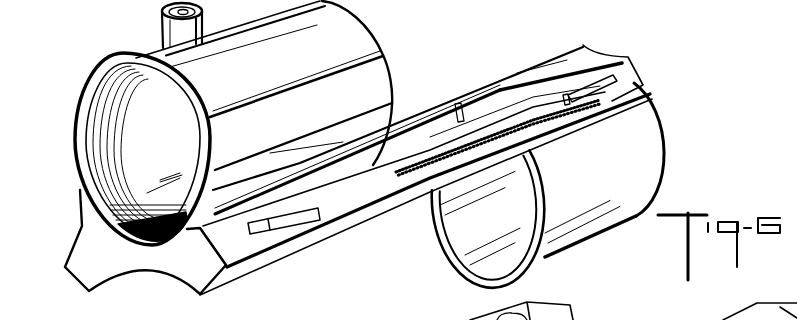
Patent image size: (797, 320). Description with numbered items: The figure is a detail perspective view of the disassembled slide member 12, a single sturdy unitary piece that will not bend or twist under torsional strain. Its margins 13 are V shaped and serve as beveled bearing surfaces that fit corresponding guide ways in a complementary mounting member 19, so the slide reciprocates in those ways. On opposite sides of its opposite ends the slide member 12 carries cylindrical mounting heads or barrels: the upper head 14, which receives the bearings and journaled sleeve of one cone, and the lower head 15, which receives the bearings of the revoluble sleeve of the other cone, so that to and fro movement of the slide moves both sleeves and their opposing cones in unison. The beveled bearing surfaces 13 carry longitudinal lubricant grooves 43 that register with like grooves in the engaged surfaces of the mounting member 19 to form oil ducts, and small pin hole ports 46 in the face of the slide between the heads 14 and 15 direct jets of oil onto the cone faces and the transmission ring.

The slide member 12 is at (545, 61).
The margins 13 is at (67, 267).
The upper mounting head 14 is at (344, 25).
The lower mounting head 15 is at (623, 218).
The mounting member 19 is at (450, 318).
The lubricant grooves 43 is at (302, 208).
The pin hole ports 46 is at (589, 126).